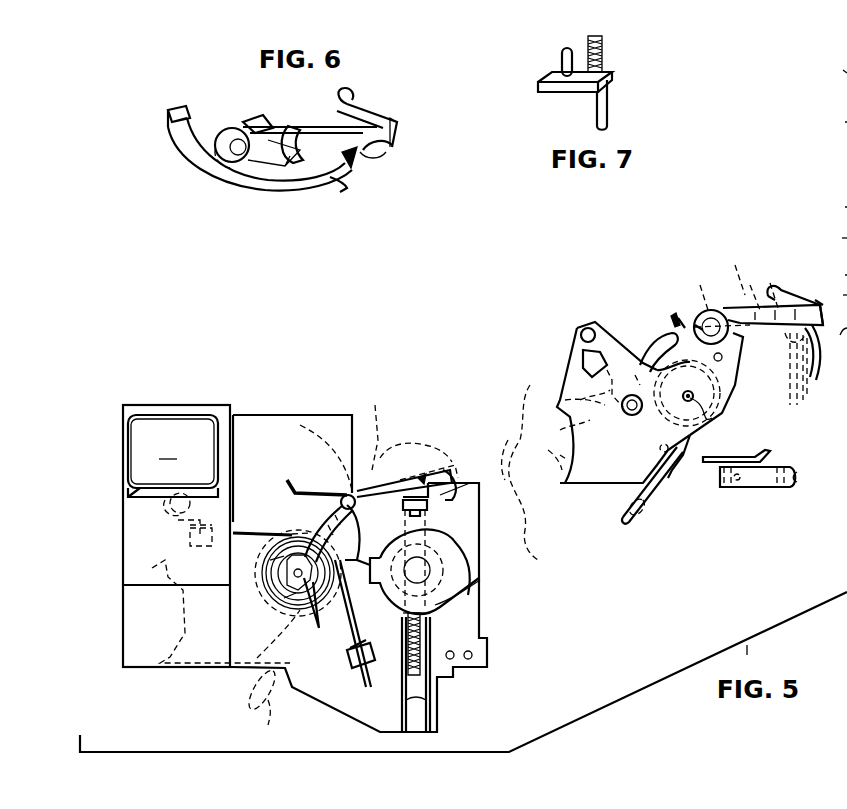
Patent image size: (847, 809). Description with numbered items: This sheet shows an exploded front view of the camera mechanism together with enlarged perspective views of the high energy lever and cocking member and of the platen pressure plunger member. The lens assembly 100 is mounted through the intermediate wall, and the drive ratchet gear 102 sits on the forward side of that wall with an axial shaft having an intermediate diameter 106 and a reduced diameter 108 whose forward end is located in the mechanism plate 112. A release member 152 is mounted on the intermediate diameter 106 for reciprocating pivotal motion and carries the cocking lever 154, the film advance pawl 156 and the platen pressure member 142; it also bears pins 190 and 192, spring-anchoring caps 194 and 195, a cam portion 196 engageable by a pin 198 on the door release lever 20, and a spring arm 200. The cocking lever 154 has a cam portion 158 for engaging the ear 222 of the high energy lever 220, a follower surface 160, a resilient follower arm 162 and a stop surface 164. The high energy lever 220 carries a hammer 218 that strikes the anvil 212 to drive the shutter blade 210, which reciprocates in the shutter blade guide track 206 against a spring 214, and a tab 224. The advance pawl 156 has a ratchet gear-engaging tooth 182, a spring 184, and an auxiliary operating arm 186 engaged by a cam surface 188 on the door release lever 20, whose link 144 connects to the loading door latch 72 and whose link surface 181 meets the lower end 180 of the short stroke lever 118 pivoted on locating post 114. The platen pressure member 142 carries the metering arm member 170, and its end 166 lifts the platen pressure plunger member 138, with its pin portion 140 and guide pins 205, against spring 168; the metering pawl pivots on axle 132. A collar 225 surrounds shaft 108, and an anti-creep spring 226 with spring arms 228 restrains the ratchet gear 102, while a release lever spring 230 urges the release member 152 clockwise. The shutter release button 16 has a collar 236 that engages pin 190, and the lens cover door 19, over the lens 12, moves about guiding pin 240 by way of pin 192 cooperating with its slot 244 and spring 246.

In FIG. 5, the picture-taking lens 12 is at (435, 585).
In FIG. 5, the shutter release button 16 is at (237, 536).
In FIG. 5, the lens cover door 19 is at (475, 610).
In FIG. 5, the door release lever 20 is at (532, 562).
In FIG. 5, the camera loading door latch 72 is at (837, 206).
In FIG. 5, the lens assembly 100 is at (462, 560).
In FIG. 5, the drive ratchet gear 102 is at (748, 401).
In FIG. 5, the intermediate diameter 106 is at (720, 414).
In FIG. 5, the reduced diameter 108 is at (293, 572).
In FIG. 5, the mechanism plate 112 is at (480, 483).
In FIG. 5, the locating post 114 is at (833, 121).
In FIG. 5, the short stroke lever 118 is at (829, 60).
In FIG. 5, the axle 132 is at (352, 670).
In FIG. 7, the platen pressure plunger member 138 is at (546, 90).
In FIG. 7, the pin portion 140 is at (597, 115).
In FIG. 5, the platen pressure member 142 is at (760, 488).
In FIG. 5, the link 144 is at (833, 343).
In FIG. 5, the release member 152 is at (150, 568).
In FIG. 5, the cocking lever 154 is at (590, 381).
In FIG. 5, the film advance pawl 156 is at (670, 335).
In FIG. 6, the cam portion 158 is at (396, 146).
In FIG. 5, the cam portion 158 is at (455, 472).
In FIG. 6, the follower surface 160 is at (372, 160).
In FIG. 5, the follower surface 160 is at (826, 355).
In FIG. 6, the resilient follower arm 162 is at (362, 118).
In FIG. 5, the resilient follower arm 162 is at (770, 292).
In FIG. 6, the stop surface 164 is at (246, 125).
In FIG. 5, the stop surface 164 is at (712, 312).
In FIG. 5, the end 166 is at (798, 480).
In FIG. 7, the spring 168 is at (604, 40).
In FIG. 5, the metering arm member 170 is at (772, 451).
In FIG. 5, the lower end 180 is at (829, 236).
In FIG. 5, the surface 181 is at (831, 293).
In FIG. 5, the ratchet gear-engaging tooth 182 is at (642, 350).
In FIG. 5, the spring 184 is at (565, 405).
In FIG. 5, the auxiliary operating arm 186 is at (566, 380).
In FIG. 5, the cam surface 188 is at (831, 273).
In FIG. 5, the pin 190 is at (175, 520).
In FIG. 5, the pin 192 is at (320, 512).
In FIG. 5, the spring-anchoring cap 194 is at (185, 540).
In FIG. 5, the spring-anchoring cap 195 is at (660, 480).
In FIG. 5, the cam portion 196 is at (580, 440).
In FIG. 5, the pin 198 is at (550, 480).
In FIG. 5, the spring arm 200 is at (660, 520).
In FIG. 7, the guide pins 205 is at (586, 50).
In FIG. 5, the shutter blade guide track 206 is at (432, 703).
In FIG. 5, the shutter blade 210 is at (422, 630).
In FIG. 5, the anvil 212 is at (428, 508).
In FIG. 5, the spring 214 is at (440, 667).
In FIG. 6, the hammer 218 is at (333, 187).
In FIG. 5, the hammer 218 is at (450, 475).
In FIG. 6, the high energy lever 220 is at (262, 178).
In FIG. 5, the high energy lever 220 is at (402, 462).
In FIG. 6, the ear 222 is at (352, 168).
In FIG. 5, the ear 222 is at (422, 476).
In FIG. 6, the tab 224 is at (292, 128).
In FIG. 5, the tab 224 is at (352, 488).
In FIG. 5, the collar 225 is at (286, 598).
In FIG. 5, the anti-creep spring 226 is at (283, 557).
In FIG. 5, the spring arms 228 is at (298, 590).
In FIG. 5, the release lever spring 230 is at (245, 541).
In FIG. 5, the collar 236 is at (165, 505).
In FIG. 5, the guiding pin 240 is at (343, 490).
In FIG. 5, the slot 244 is at (340, 502).
In FIG. 5, the spring 246 is at (352, 560).